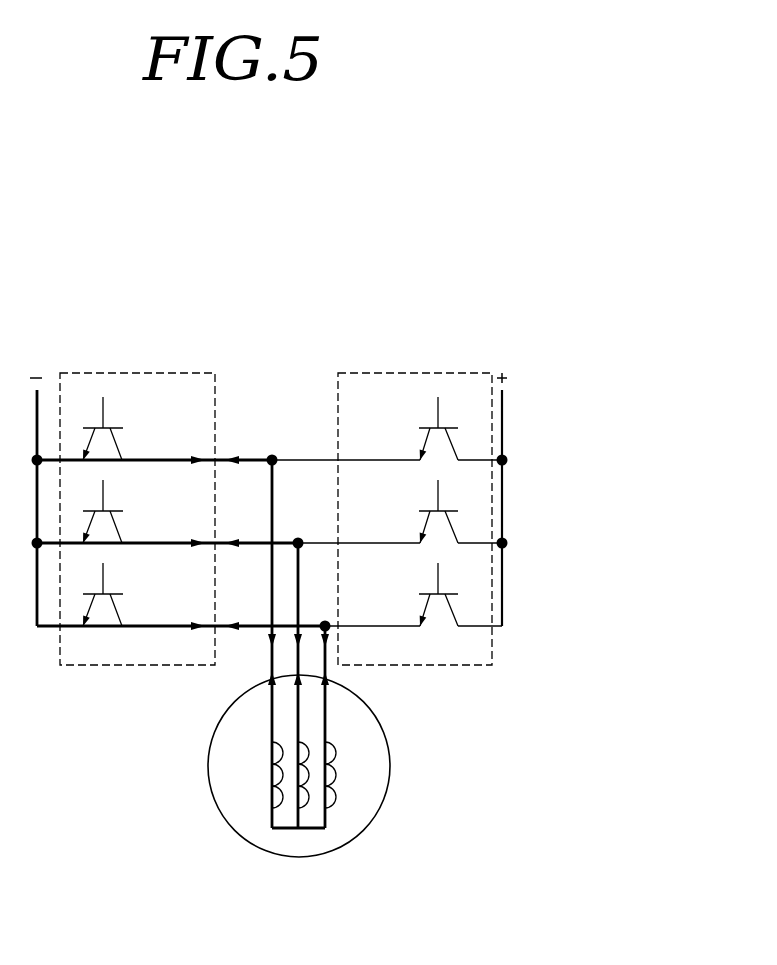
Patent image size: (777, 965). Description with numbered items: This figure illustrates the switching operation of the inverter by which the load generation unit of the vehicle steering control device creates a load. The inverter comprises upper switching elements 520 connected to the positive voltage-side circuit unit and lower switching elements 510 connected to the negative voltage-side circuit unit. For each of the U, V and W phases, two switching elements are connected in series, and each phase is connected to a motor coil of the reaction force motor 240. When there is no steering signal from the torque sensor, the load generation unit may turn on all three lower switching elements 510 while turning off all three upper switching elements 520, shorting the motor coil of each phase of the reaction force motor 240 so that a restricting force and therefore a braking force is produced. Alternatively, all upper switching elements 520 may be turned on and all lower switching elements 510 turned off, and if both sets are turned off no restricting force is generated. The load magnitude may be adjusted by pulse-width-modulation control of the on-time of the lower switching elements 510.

The lower switching elements 510 is at (137, 373).
The upper switching elements 520 is at (417, 373).
The reaction force motor 240 is at (353, 840).